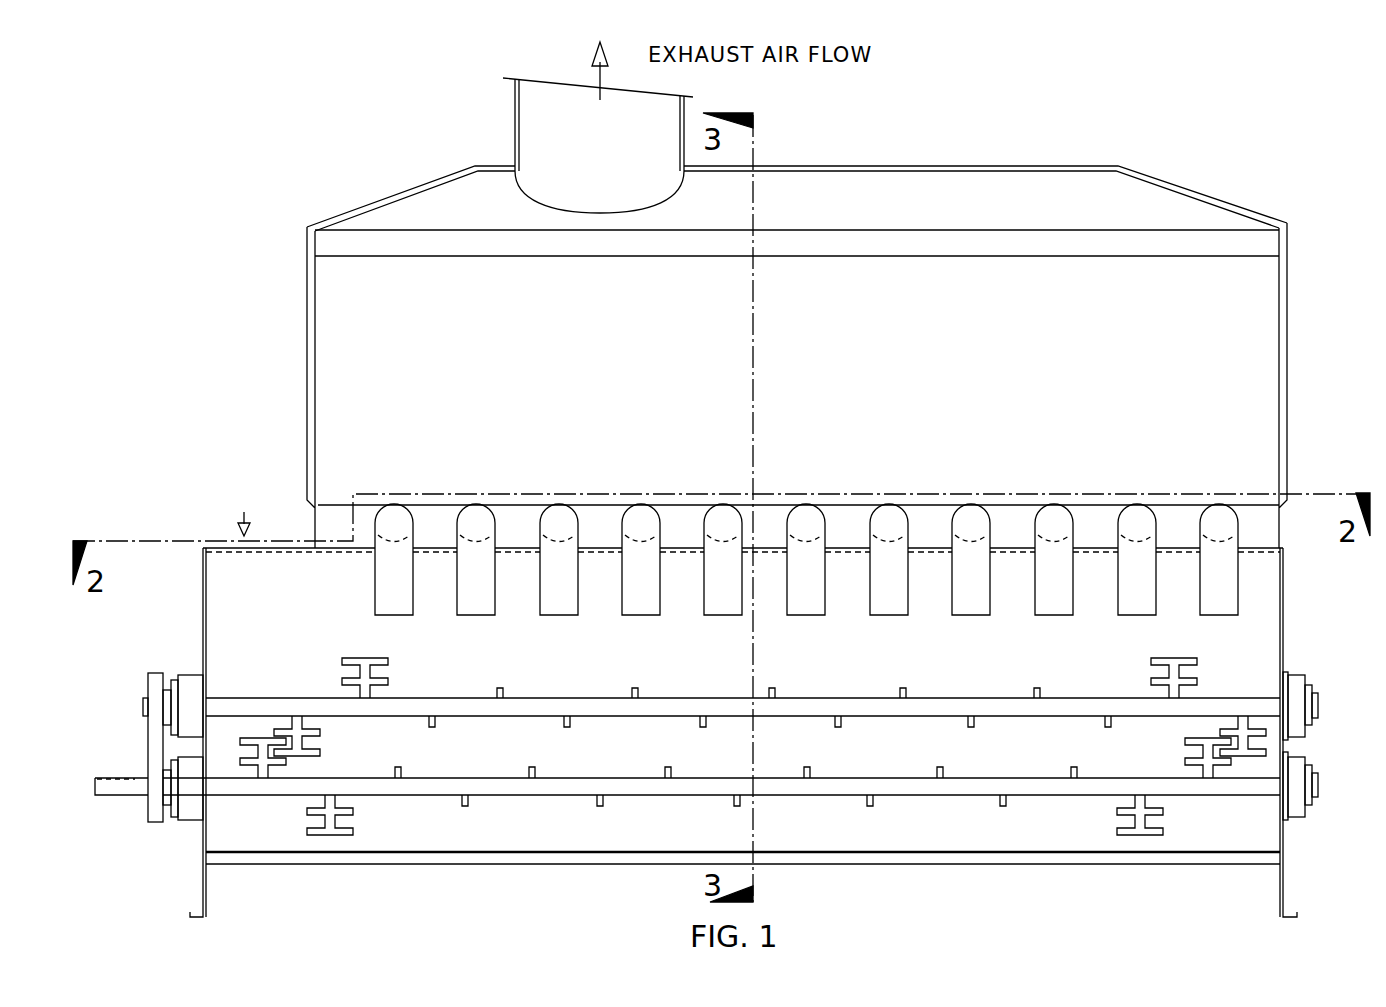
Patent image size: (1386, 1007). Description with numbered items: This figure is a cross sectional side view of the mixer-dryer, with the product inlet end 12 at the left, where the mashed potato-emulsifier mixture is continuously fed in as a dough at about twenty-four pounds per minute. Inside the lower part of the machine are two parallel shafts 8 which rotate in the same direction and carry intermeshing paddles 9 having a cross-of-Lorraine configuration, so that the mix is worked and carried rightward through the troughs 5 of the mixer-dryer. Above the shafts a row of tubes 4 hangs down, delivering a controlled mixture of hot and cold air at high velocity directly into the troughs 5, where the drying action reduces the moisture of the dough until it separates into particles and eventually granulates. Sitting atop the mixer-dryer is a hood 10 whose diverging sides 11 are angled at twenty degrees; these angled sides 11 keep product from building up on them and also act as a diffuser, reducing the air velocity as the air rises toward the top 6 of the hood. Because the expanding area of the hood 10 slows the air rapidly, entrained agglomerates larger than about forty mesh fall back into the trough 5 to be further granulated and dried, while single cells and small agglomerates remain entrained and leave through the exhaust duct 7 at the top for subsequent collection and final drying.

The tubes 4 is at (707, 613).
The troughs 5 is at (203, 598).
The top of the hood 6 is at (797, 348).
The exhaust duct 7 is at (515, 132).
The parallel shafts 8 is at (917, 775).
The intermeshing paddles 9 is at (320, 746).
The hood 10 is at (1205, 192).
The diverging sides 11 is at (1279, 305).
The inlet end 12 is at (249, 510).